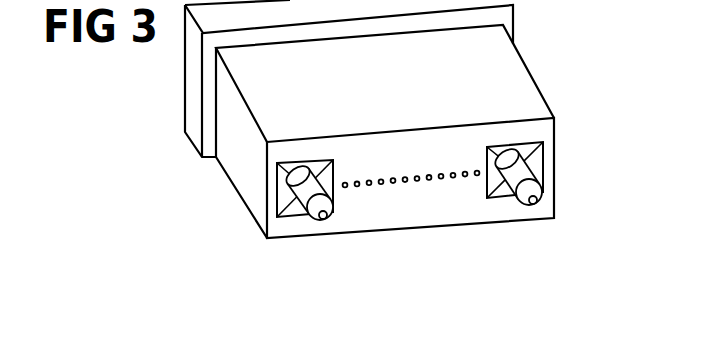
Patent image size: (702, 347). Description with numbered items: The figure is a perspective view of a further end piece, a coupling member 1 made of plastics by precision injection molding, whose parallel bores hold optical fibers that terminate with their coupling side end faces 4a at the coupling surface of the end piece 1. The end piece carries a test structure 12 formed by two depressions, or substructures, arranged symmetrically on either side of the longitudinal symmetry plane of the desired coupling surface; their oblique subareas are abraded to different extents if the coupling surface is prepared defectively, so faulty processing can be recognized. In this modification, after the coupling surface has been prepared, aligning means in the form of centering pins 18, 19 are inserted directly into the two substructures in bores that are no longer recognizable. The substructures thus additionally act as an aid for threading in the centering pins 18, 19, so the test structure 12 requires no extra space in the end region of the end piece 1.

The coupling member 1 is at (507, 55).
The test structure 12 is at (253, 183).
The centering pin 18 is at (303, 177).
The centering pin 19 is at (543, 190).
The coupling side end faces 4a is at (357, 181).